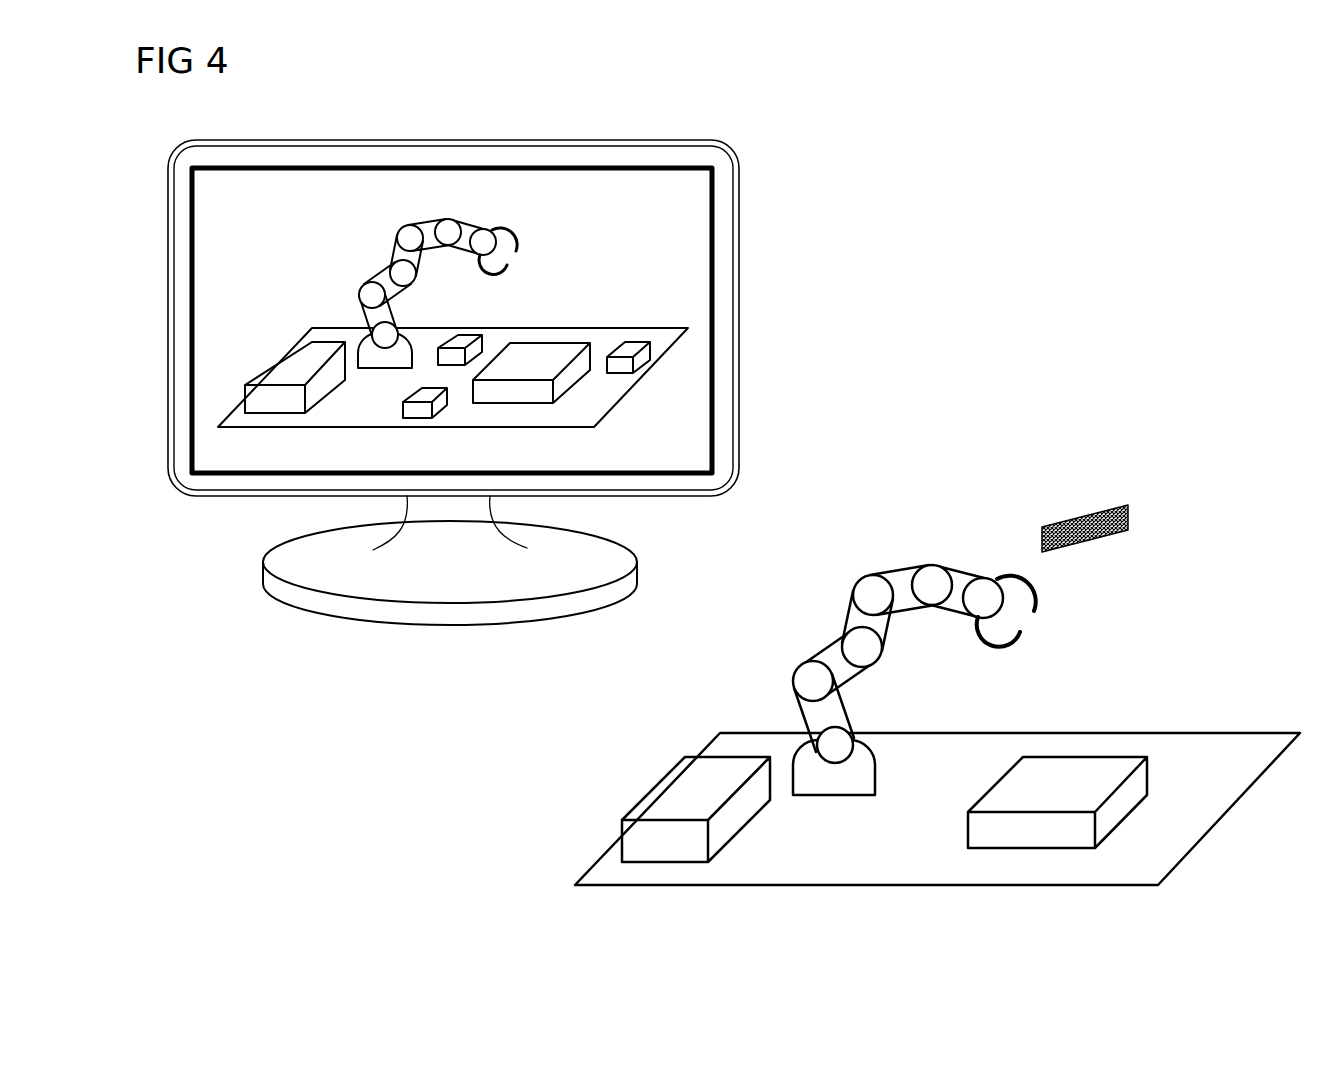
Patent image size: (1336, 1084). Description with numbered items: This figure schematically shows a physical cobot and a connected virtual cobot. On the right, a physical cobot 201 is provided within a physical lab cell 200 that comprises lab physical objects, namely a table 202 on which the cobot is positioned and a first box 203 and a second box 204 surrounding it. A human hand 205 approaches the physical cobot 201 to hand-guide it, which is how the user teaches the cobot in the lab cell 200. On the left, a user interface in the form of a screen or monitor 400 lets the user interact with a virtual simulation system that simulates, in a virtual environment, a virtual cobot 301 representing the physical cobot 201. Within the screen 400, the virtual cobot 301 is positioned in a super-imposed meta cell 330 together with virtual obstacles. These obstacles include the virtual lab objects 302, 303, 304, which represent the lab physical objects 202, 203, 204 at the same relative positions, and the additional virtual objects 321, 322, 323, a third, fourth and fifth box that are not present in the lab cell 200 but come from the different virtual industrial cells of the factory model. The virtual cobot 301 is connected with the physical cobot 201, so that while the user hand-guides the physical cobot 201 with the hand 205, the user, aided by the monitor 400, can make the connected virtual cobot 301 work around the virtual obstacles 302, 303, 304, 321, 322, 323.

The user interface 400 is at (226, 218).
The super-imposed meta cell 330 is at (553, 234).
The virtual cobot 301 is at (390, 277).
The virtual lab object 302 is at (597, 342).
The virtual lab object 303 is at (550, 362).
The virtual lab object 304 is at (300, 360).
The third box 321 is at (458, 338).
The forth box 322 is at (622, 368).
The fifth box 323 is at (393, 402).
The lab cell 200 is at (1108, 424).
The physical cobot 201 is at (892, 568).
The table 202 is at (1227, 755).
The first box 203 is at (1040, 838).
The second box 204 is at (650, 853).
The human hand 205 is at (1012, 524).